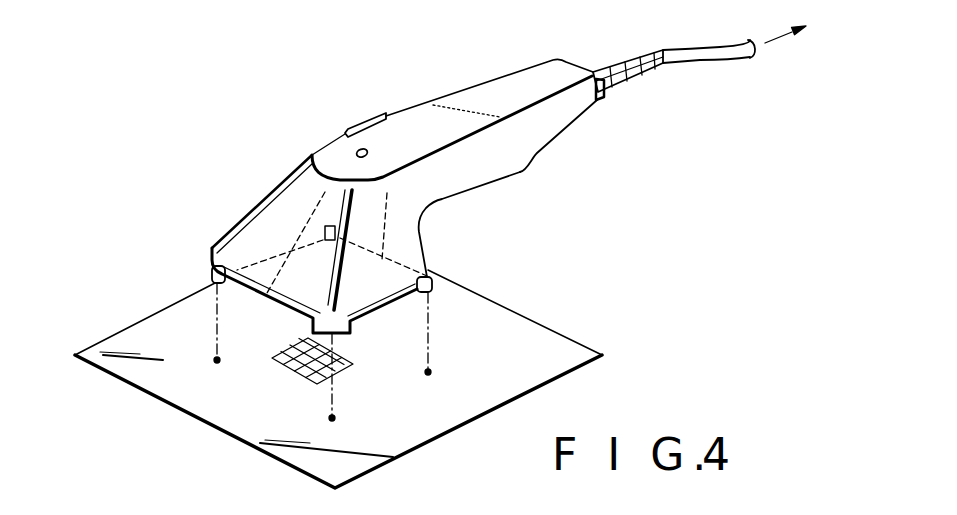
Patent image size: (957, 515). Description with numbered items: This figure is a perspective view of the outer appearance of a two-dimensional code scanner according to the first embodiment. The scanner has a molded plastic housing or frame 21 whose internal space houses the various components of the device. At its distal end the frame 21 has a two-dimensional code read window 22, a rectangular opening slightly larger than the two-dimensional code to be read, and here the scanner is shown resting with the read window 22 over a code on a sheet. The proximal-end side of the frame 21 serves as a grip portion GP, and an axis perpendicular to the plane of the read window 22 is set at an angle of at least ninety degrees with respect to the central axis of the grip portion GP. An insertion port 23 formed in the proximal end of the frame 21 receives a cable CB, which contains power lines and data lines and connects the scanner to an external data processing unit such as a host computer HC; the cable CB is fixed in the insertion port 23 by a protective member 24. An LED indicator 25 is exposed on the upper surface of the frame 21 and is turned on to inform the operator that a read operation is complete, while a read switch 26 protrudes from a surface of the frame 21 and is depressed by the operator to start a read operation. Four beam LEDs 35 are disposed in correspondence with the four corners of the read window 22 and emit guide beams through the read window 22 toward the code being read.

The housing or frame 21 is at (468, 103).
The 2-dimensional code read window 22 is at (418, 295).
The insertion port 23 is at (610, 90).
The protective member 24 is at (606, 65).
The LED indicator 25 is at (357, 152).
The read switch 26 is at (360, 131).
The beam LEDs 35 is at (325, 230).
The grip portion GP is at (558, 152).
The cable CB is at (703, 61).
The host computer HC is at (804, 26).